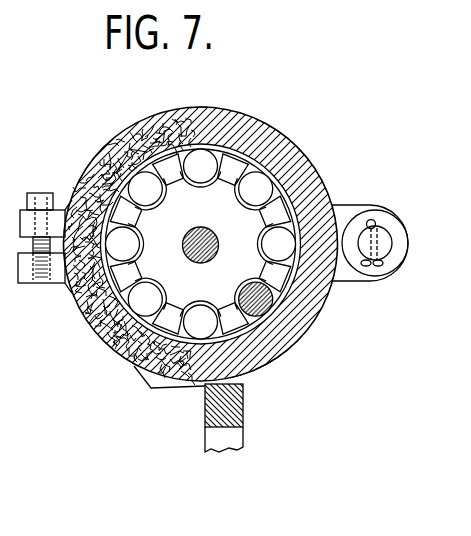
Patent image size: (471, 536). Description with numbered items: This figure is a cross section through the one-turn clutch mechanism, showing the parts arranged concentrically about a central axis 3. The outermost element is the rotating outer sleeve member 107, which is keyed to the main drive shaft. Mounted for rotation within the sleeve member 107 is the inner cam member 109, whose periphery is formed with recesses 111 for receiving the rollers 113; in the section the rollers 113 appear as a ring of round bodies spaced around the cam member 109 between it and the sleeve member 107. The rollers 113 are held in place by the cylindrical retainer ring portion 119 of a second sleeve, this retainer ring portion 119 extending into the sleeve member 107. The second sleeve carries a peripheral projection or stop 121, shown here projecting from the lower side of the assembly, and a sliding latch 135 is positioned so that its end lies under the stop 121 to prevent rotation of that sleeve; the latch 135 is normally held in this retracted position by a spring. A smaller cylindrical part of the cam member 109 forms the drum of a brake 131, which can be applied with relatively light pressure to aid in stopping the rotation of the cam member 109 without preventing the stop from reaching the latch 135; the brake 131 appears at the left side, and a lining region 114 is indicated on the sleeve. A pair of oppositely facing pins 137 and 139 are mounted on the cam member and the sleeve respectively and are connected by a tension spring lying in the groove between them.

The shaft 3 is at (213, 233).
The outer sleeve member 107 is at (281, 149).
The inner cam member 109 is at (283, 297).
The peripheral recesses 111 is at (269, 306).
The rollers 113 is at (199, 186).
The friction lining 114 is at (94, 320).
The cylindrical retainer ring portion 119 is at (177, 304).
The peripheral projection or stop 121 is at (190, 391).
The brake 131 is at (60, 211).
The sliding latch 135 is at (243, 412).
The pin 137 is at (195, 107).
The pin 139 is at (252, 368).